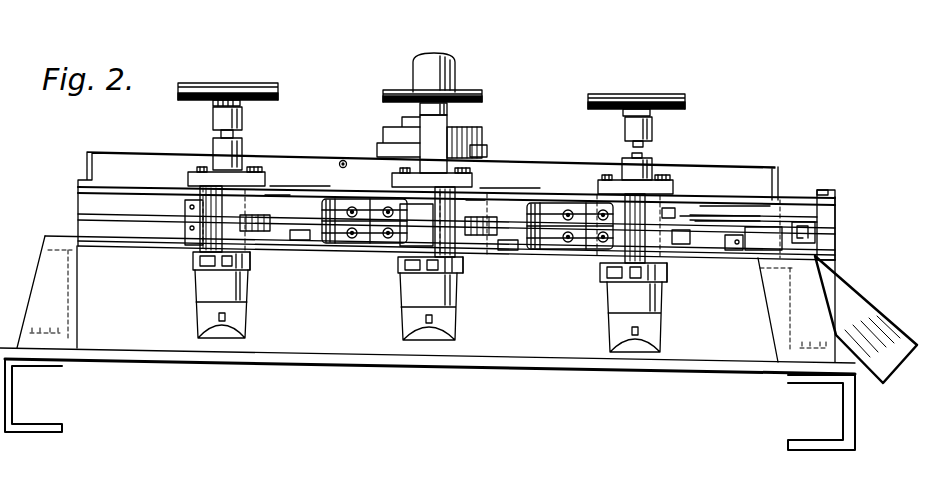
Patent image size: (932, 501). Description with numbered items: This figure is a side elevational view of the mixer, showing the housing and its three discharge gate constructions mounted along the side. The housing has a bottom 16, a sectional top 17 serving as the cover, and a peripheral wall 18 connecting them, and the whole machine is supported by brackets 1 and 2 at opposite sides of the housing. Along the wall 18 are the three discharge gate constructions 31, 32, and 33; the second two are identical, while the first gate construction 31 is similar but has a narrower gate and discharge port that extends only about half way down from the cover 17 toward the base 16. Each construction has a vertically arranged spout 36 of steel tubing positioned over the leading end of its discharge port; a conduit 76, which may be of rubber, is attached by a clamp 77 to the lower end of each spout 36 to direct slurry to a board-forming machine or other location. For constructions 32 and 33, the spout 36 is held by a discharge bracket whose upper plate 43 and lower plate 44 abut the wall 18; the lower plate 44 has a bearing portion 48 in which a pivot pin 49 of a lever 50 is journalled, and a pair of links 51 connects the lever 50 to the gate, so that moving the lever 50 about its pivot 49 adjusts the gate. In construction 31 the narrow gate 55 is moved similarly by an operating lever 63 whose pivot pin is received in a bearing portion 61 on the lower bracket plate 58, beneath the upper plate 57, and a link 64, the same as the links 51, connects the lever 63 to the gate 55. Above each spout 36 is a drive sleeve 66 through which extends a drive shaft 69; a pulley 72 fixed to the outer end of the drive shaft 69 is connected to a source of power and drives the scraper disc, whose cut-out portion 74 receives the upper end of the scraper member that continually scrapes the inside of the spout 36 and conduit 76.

The bracket 1 is at (70, 280).
The bracket 2 is at (795, 282).
The bottom 16 is at (728, 250).
The sectional top 17 is at (712, 207).
The peripheral wall 18 is at (123, 217).
The discharge gate construction 31 is at (590, 182).
The discharge gate construction 32 is at (391, 180).
The discharge gate construction 33 is at (185, 185).
The spout 36 is at (255, 258).
The upper plate 43 is at (282, 190).
The lower plate 44 is at (292, 242).
The bearing portion 48 is at (185, 222).
The pivot pin 49 is at (268, 195).
The lever 50 is at (314, 240).
The links 51 is at (248, 235).
The gate 55 is at (693, 228).
The upper plate 57 is at (700, 218).
The lower bracket plate 58 is at (680, 230).
The bearing portion 61 is at (683, 218).
The operating lever 63 is at (775, 220).
The link 64 is at (667, 213).
The drive sleeve 66 is at (242, 150).
The drive shaft 69 is at (218, 135).
The pulley 72 is at (266, 84).
The cut-out portion 74 is at (455, 68).
The conduit 76 is at (217, 315).
The clamp 77 is at (195, 264).